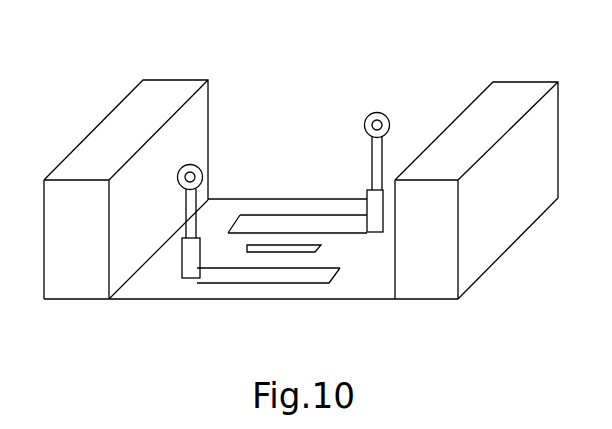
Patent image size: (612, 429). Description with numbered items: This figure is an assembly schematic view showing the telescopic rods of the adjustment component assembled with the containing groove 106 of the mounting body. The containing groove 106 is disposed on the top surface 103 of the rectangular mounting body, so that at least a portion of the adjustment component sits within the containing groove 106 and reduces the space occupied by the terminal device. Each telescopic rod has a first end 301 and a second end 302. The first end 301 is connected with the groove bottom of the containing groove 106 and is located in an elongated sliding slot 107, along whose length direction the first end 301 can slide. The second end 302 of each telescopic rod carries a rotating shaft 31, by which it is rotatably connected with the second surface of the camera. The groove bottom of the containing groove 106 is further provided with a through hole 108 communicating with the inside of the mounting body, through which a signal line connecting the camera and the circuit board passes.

The top surface 103 is at (163, 105).
The containing groove 106 is at (313, 103).
The rotating shaft 31 is at (300, 208).
The second end 302 is at (199, 192).
The first end 301 is at (196, 278).
The sliding slot 107 is at (335, 228).
The through hole 108 is at (274, 268).